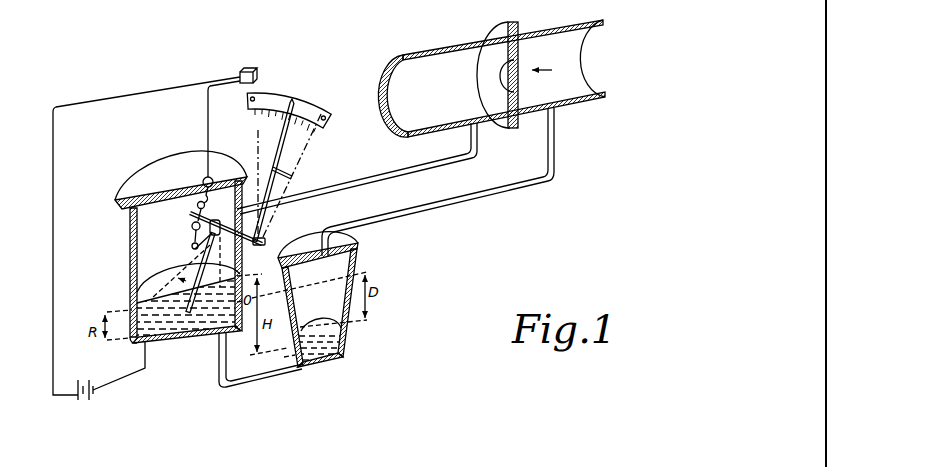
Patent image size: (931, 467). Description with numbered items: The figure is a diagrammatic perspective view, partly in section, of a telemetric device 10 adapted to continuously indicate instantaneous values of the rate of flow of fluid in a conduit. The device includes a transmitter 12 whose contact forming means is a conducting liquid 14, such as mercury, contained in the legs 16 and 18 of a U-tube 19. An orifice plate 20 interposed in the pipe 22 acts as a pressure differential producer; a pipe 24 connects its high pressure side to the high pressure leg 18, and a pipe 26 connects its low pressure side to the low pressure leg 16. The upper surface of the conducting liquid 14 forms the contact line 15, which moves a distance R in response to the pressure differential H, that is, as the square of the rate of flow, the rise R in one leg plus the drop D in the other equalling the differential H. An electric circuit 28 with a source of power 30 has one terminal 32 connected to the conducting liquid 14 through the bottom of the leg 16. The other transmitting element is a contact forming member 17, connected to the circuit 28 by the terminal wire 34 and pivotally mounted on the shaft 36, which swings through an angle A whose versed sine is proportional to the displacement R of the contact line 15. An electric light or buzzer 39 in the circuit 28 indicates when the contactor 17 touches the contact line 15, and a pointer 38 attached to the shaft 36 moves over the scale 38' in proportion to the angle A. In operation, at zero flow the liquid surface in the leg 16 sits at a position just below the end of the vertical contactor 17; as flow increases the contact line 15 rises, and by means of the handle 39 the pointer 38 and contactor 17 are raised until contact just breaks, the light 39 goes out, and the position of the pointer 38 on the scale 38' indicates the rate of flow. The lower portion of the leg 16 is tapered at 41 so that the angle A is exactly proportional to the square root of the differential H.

The telemetric device 10 is at (400, 245).
The transmitter 12 is at (128, 253).
The conducting liquid 14 is at (176, 332).
The contact line 15 is at (147, 298).
The low pressure leg 16 is at (203, 340).
The contact forming member 17 is at (238, 276).
The high pressure leg 18 is at (334, 359).
The U-tube 19 is at (268, 382).
The orifice plate 20 is at (518, 56).
The pipe 22 is at (577, 104).
The pipe 24 is at (502, 187).
The pipe 26 is at (433, 165).
The electric circuit 28 is at (52, 368).
The source of power 30 is at (90, 400).
The terminal 32 is at (137, 377).
The terminal wire 34 is at (193, 238).
The shaft 36 is at (265, 243).
The pointer 38 is at (287, 170).
The scale 38' is at (293, 101).
The electric light or buzzer 39 is at (257, 73).
The tapered portion of leg 41 is at (281, 358).